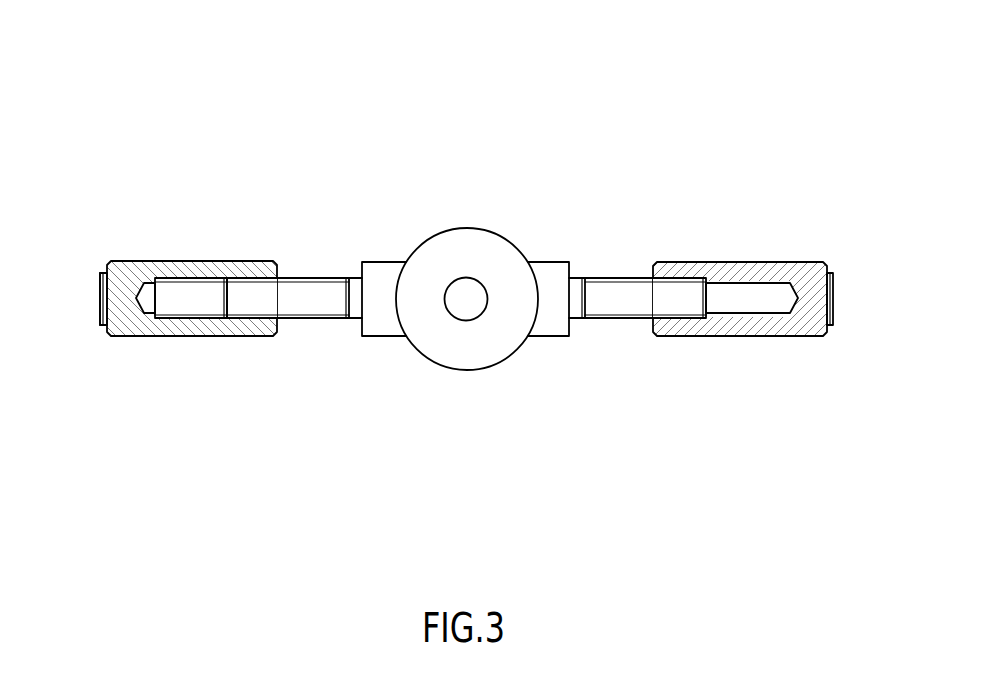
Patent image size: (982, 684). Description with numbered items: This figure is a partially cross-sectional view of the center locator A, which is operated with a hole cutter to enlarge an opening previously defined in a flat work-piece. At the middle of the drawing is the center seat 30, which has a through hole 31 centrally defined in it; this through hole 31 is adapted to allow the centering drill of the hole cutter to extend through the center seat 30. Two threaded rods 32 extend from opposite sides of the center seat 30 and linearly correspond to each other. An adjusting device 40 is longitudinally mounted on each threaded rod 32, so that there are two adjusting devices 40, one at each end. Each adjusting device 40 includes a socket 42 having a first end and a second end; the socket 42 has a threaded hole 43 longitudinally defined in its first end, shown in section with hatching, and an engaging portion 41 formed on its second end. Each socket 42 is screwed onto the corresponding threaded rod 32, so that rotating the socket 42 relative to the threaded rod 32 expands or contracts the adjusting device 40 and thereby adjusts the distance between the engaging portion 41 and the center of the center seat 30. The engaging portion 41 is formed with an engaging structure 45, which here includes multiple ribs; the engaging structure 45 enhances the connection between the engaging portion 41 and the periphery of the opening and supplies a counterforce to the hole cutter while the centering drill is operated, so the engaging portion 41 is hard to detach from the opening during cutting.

The center locator A is at (278, 114).
The center seat 30 is at (507, 320).
The through hole 31 is at (486, 300).
The threaded rod 32 is at (319, 278).
The adjusting device 40 is at (457, 301).
The engaging portion 41 is at (100, 274).
The socket 42 is at (222, 337).
The threaded hole 43 is at (192, 317).
The engaging structure 45 is at (101, 299).